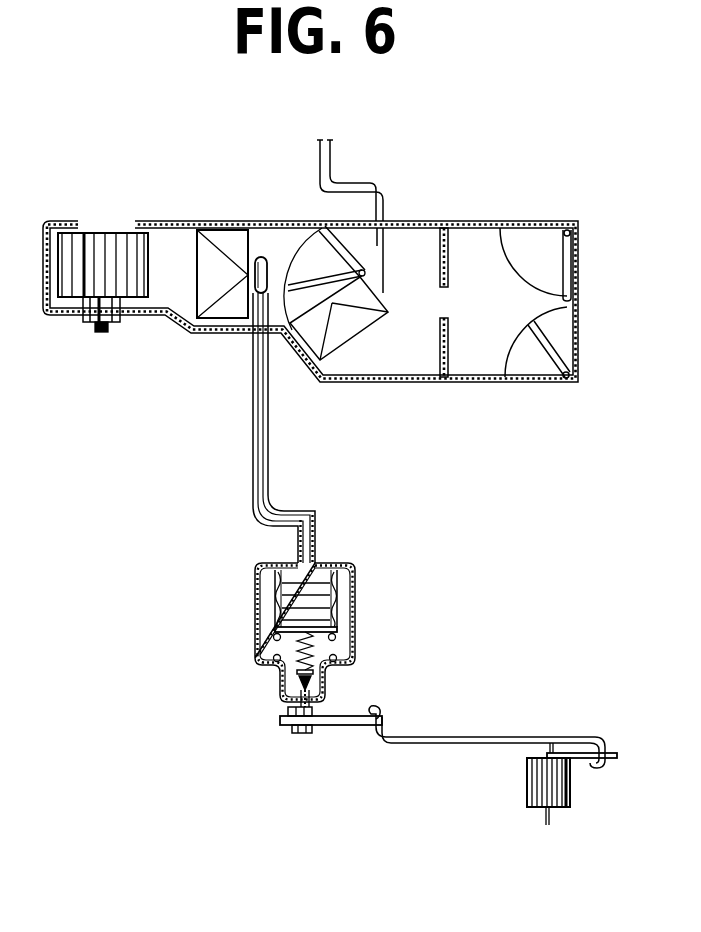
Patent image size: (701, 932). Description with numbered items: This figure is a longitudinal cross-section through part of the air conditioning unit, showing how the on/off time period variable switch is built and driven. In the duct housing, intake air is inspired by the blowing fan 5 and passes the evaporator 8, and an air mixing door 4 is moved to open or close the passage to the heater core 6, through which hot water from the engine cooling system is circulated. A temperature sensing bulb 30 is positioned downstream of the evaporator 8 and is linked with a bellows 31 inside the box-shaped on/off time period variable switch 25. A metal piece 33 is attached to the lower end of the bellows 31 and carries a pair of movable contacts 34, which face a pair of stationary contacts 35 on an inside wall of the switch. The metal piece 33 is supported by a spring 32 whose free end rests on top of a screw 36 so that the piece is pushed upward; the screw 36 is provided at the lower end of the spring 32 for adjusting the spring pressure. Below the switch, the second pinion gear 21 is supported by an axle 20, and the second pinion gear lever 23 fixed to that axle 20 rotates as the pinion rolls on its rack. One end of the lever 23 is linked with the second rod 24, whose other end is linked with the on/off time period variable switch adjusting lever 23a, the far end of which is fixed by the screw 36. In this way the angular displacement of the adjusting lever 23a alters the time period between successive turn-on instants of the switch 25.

The blowing fan 5 is at (108, 232).
The evaporator 8 is at (234, 240).
The temperature sensing bulb 30 is at (262, 256).
The air mixing door 4 is at (287, 325).
The heater core 6 is at (355, 322).
The on/off time period variable switch 25 is at (362, 565).
The bellows 31 is at (340, 605).
The metal piece 33 is at (293, 613).
The movable contacts 34 is at (273, 642).
The stationary contacts 35 is at (277, 662).
The spring 32 is at (292, 673).
The screw 36 is at (302, 740).
The on/off time period variable switch adjusting lever 23a is at (350, 728).
The second rod 24 is at (500, 735).
The second pinion gear lever 23 is at (610, 758).
The second pinion gear 21 is at (570, 785).
The axle 20 is at (548, 826).